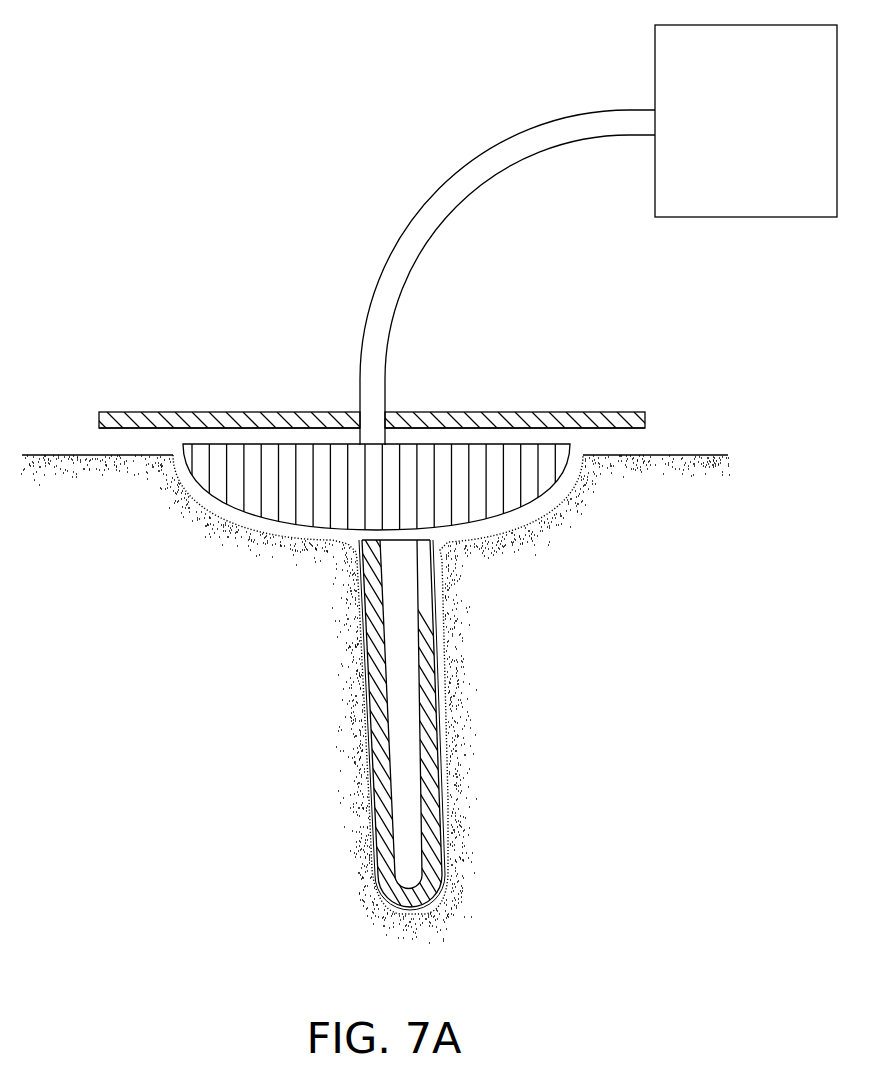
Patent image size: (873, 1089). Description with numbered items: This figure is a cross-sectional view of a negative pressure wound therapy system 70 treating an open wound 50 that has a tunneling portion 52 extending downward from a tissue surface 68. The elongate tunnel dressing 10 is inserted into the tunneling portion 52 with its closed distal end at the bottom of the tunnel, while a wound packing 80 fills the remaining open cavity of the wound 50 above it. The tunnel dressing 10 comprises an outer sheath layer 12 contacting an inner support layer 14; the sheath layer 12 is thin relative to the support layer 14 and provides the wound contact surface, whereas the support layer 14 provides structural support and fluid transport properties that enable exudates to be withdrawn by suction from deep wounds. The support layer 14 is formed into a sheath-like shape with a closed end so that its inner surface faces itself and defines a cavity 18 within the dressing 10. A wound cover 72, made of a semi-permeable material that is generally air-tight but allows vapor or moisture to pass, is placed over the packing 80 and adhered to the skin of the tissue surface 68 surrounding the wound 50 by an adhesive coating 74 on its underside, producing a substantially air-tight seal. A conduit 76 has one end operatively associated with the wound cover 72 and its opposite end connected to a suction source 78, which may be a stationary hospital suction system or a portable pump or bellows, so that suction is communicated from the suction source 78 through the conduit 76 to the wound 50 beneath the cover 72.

The negative pressure wound therapy system 70 is at (306, 168).
The conduit 76 is at (502, 142).
The suction source 78 is at (733, 134).
The open wound 50 is at (578, 443).
The wound cover 72 is at (625, 412).
The adhesive coating 74 is at (628, 430).
The tissue surface 68 is at (97, 457).
The wound packing 80 is at (505, 490).
The tunneling portion 52 is at (353, 540).
The tunnel dressing 10 is at (445, 662).
The cavity 18 is at (405, 761).
The support layer 14 is at (434, 841).
The outer sheath layer 12 is at (441, 867).